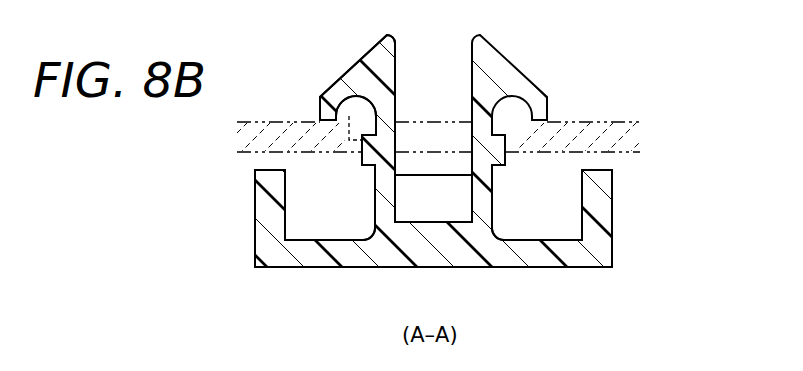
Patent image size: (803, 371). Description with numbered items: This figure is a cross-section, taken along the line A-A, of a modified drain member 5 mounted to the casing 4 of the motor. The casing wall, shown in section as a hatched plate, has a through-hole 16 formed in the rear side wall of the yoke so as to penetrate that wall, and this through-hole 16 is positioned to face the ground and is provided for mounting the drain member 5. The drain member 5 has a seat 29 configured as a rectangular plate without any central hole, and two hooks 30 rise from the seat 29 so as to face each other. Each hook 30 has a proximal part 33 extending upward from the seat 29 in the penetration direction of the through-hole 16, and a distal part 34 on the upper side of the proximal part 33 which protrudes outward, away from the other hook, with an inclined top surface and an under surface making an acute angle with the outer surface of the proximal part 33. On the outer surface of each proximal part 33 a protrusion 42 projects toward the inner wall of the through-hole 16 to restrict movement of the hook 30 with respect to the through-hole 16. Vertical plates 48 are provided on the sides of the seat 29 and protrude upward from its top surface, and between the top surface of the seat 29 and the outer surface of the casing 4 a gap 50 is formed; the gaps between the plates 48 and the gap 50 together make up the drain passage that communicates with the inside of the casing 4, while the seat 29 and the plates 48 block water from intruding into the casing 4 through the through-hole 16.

The casing 4 is at (583, 123).
The drain member 5 is at (562, 287).
The through-hole 16 is at (336, 113).
The seat 29 is at (540, 258).
The hooks 30 is at (471, 75).
The proximal part 33 is at (378, 192).
The distal part 34 is at (357, 73).
The protrusion 42 is at (362, 165).
The vertical plates 48 is at (451, 197).
The gap 50 is at (545, 216).